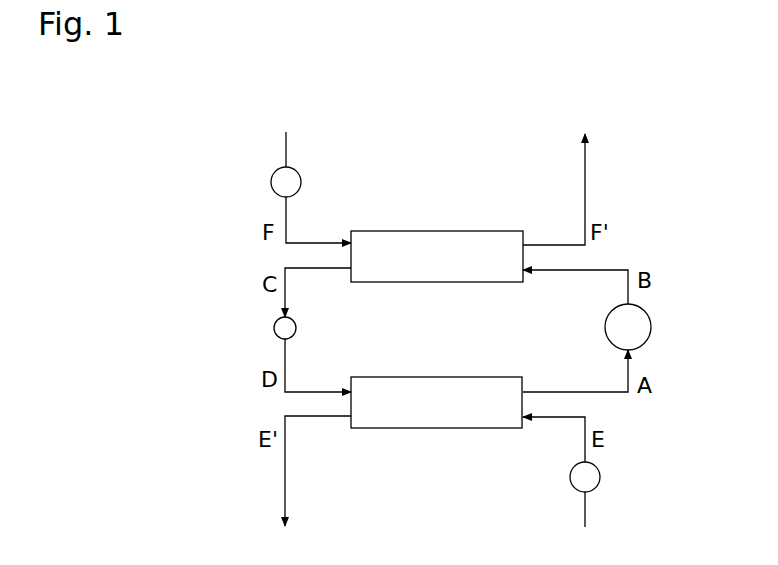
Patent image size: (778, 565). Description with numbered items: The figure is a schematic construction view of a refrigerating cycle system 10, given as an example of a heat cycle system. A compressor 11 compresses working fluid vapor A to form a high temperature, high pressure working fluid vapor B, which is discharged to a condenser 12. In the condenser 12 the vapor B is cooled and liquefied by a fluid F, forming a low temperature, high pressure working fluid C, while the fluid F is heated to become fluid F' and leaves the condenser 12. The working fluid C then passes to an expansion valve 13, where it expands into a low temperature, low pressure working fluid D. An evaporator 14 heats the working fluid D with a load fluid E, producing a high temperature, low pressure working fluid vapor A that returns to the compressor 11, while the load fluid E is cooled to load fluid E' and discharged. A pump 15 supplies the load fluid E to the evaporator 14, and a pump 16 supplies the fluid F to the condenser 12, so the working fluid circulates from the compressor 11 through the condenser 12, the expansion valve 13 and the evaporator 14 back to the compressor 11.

The refrigerating cycle system 10 is at (415, 173).
The compressor 11 is at (651, 327).
The condenser 12 is at (455, 231).
The expansion valve 13 is at (274, 328).
The evaporator 14 is at (455, 377).
The pump 15 is at (600, 477).
The pump 16 is at (271, 182).